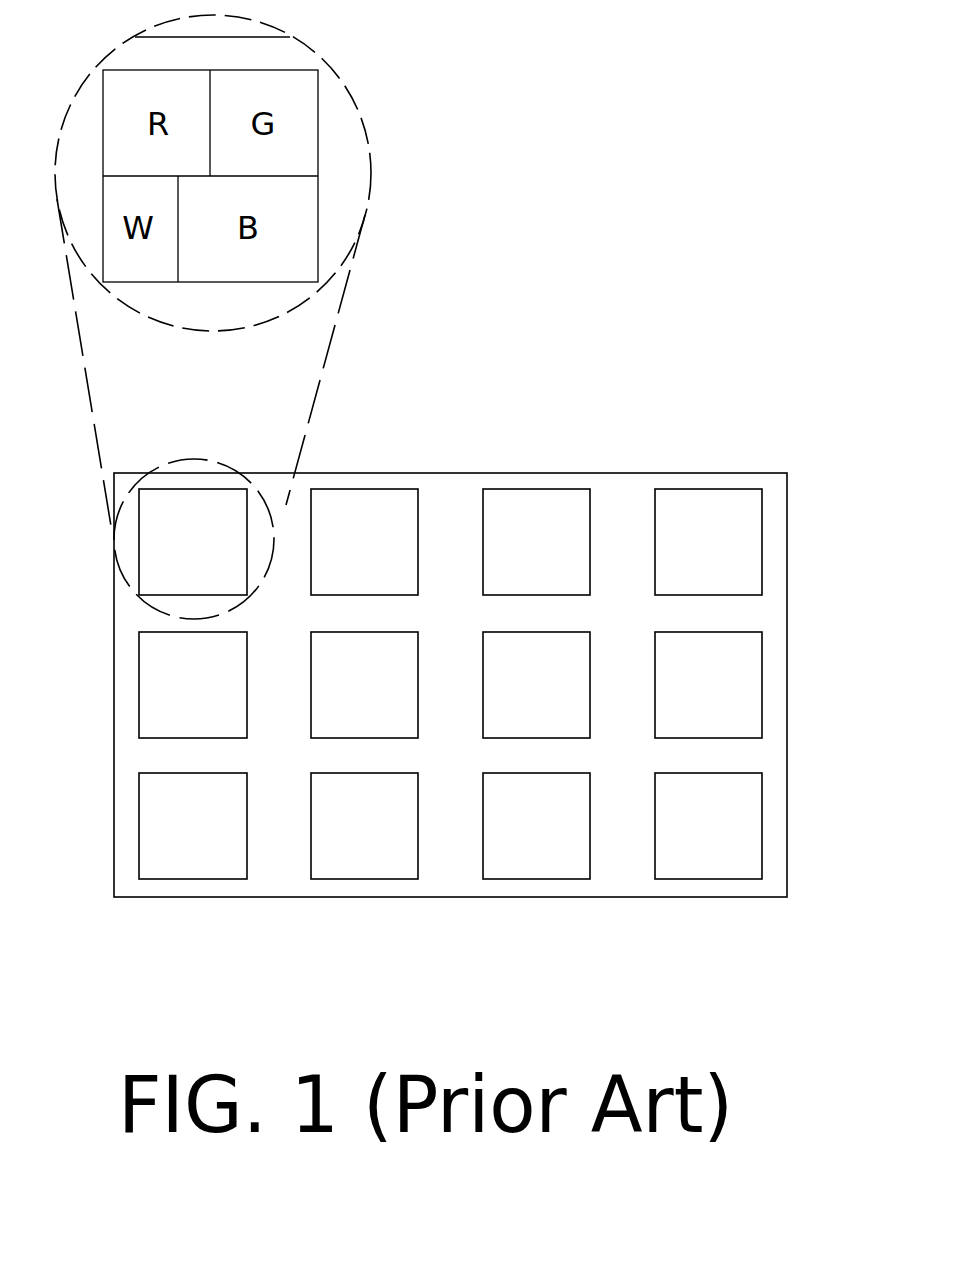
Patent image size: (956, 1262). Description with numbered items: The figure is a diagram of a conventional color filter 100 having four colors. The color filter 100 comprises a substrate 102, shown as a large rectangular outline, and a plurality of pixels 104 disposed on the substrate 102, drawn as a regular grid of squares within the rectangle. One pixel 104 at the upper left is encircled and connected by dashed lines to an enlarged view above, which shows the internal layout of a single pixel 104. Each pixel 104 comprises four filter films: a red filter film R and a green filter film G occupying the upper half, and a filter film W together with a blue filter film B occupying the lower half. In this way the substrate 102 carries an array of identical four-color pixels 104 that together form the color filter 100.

The color filter 100 is at (439, 723).
The substrate 102 is at (127, 755).
The pixel 104 is at (145, 542).